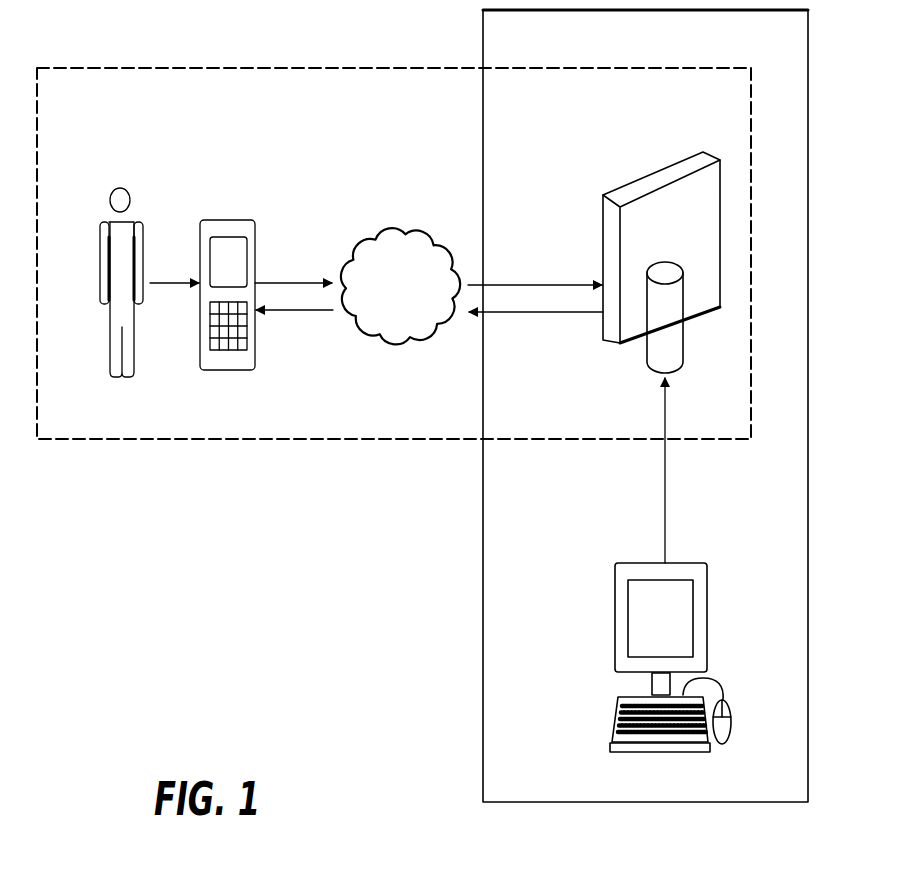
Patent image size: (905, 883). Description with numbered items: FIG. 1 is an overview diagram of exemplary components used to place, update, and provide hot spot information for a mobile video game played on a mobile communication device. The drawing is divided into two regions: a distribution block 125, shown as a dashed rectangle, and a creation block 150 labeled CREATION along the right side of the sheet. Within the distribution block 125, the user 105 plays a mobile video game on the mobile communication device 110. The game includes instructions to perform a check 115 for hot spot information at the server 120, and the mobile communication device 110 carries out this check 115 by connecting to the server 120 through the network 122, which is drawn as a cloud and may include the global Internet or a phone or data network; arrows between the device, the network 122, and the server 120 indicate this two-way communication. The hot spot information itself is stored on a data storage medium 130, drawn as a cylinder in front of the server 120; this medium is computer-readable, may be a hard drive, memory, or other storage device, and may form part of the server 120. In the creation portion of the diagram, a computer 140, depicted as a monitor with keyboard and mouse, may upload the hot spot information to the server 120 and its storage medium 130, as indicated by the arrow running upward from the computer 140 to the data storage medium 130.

The user 105 is at (107, 221).
The mobile communication device 110 is at (215, 219).
The check 115 is at (303, 281).
The server 120 is at (623, 183).
The network 122 is at (453, 241).
The distribution block 125 is at (305, 100).
The data storage medium 130 is at (677, 353).
The computer 140 is at (730, 606).
The creation environment 150 is at (493, 620).